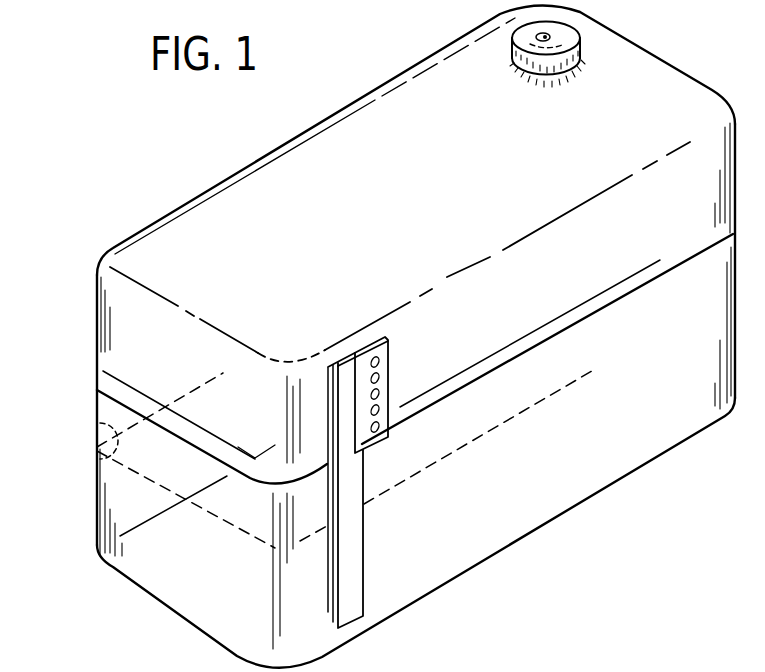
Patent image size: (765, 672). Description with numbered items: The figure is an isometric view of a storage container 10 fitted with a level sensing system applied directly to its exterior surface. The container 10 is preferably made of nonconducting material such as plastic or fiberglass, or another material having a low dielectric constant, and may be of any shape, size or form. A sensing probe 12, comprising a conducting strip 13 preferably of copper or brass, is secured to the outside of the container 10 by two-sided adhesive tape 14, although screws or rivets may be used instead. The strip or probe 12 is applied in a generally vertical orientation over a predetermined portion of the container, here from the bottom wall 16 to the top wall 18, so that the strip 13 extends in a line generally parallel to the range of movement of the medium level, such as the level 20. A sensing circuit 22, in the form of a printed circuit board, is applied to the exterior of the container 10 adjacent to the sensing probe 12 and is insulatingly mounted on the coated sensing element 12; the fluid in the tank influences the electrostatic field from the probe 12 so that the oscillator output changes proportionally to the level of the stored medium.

The storage container 10 is at (97, 480).
The sensing probe 12 is at (371, 468).
The conducting strip 13 is at (349, 482).
The two-sided adhesive tape 14 is at (331, 613).
The bottom wall 16 is at (147, 590).
The top wall 18 is at (145, 242).
The level 20 is at (97, 419).
The sensing circuit 22 is at (391, 348).